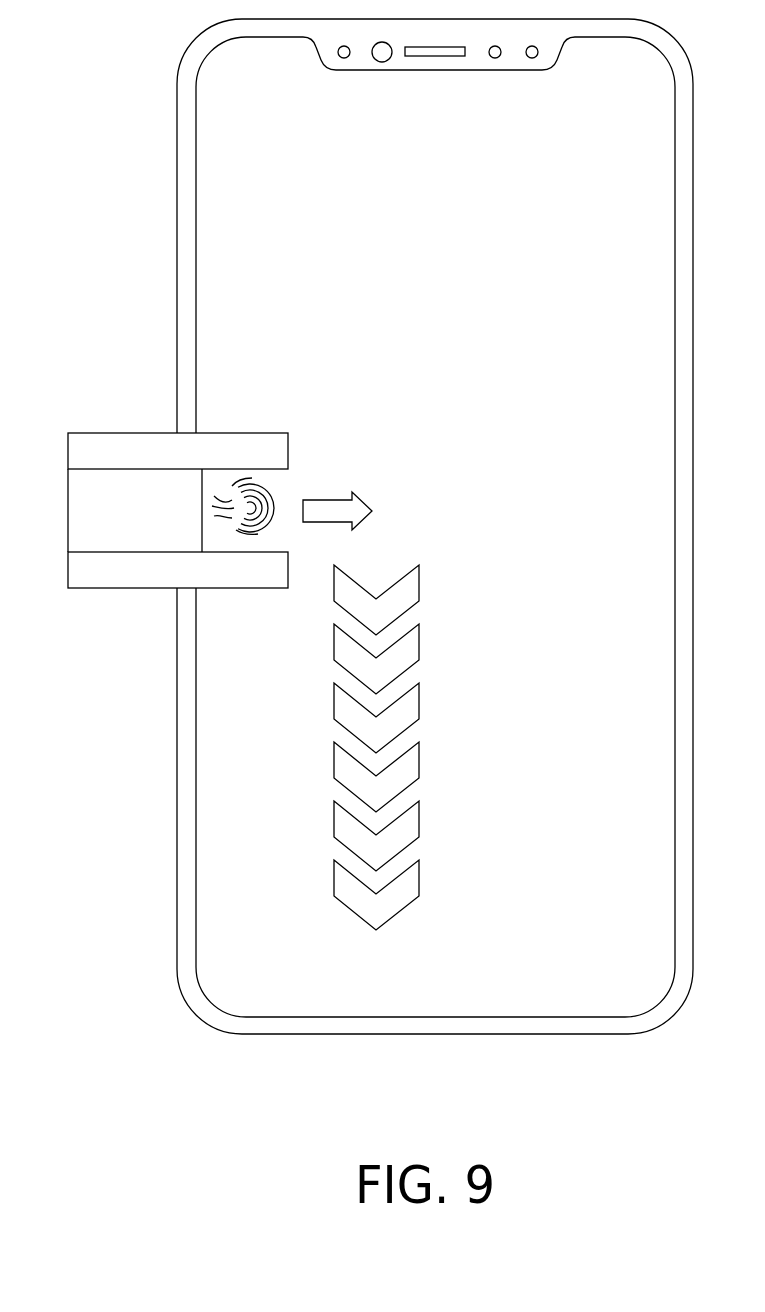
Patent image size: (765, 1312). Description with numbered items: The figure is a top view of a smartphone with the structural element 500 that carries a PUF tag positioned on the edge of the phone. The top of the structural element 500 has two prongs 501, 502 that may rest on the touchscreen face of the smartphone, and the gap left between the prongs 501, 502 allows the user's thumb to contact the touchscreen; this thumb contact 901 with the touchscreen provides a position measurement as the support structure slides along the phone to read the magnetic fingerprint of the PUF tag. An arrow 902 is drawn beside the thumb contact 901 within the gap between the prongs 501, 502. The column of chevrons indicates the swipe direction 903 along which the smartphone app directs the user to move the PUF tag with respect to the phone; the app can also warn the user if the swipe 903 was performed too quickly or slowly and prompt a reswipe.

The structural element 500 is at (182, 539).
The prong 501 is at (267, 432).
The prong 502 is at (253, 583).
The fingerprint 901 is at (258, 502).
The insertion direction arrow 902 is at (384, 493).
The swipe direction 903 is at (436, 707).